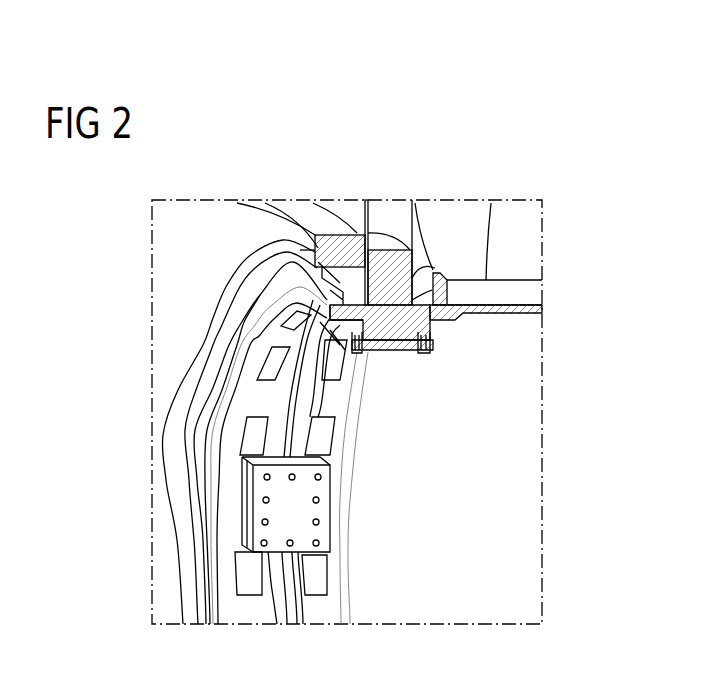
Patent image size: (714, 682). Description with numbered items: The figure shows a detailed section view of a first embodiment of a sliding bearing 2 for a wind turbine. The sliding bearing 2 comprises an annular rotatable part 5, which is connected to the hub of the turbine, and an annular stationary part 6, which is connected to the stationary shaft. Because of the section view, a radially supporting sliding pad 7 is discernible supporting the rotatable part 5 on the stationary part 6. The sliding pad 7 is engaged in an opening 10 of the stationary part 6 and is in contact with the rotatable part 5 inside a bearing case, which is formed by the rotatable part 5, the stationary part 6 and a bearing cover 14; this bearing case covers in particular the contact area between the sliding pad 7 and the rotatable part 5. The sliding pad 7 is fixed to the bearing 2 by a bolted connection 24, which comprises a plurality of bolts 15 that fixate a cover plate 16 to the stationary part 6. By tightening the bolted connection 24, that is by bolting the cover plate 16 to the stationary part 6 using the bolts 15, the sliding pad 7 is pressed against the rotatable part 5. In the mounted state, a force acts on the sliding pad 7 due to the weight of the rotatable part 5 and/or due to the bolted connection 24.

The sliding bearing 2 is at (433, 267).
The rotatable part 5 is at (392, 262).
The stationary part 6 is at (437, 327).
The radially supporting sliding pad 7 is at (380, 342).
The opening 10 is at (330, 336).
The bearing cover 14 is at (278, 284).
The bolts 15 is at (262, 477).
The cover plate 16 is at (252, 508).
The bolted connection 24 is at (306, 453).